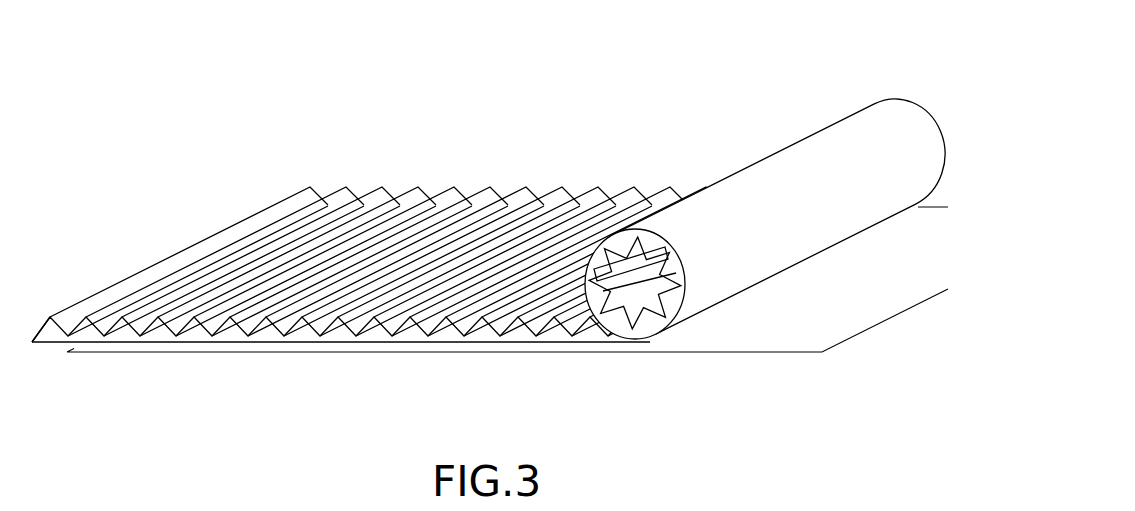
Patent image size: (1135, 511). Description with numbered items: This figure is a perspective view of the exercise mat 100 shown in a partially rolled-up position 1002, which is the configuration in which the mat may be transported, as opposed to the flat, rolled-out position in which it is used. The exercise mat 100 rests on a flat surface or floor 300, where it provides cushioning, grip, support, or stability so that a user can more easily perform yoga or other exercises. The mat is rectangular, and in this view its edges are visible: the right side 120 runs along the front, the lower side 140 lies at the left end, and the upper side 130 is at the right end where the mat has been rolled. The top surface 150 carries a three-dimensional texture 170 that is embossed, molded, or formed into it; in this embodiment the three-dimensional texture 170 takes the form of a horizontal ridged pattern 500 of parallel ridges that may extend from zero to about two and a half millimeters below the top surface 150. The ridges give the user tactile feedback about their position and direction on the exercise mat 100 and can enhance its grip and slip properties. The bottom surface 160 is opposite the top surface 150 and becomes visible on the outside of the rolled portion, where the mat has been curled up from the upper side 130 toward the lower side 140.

The exercise mat 100 is at (240, 247).
The rolled-up position 1002 is at (270, 187).
The three-dimensional texture 170 is at (368, 198).
The horizontal ridged pattern 500 is at (473, 207).
The top surface 150 is at (577, 197).
The lower side 140 is at (41, 328).
The right side 120 is at (228, 332).
The upper side 130 is at (613, 287).
The bottom surface 160 is at (828, 150).
The floor 300 is at (748, 328).